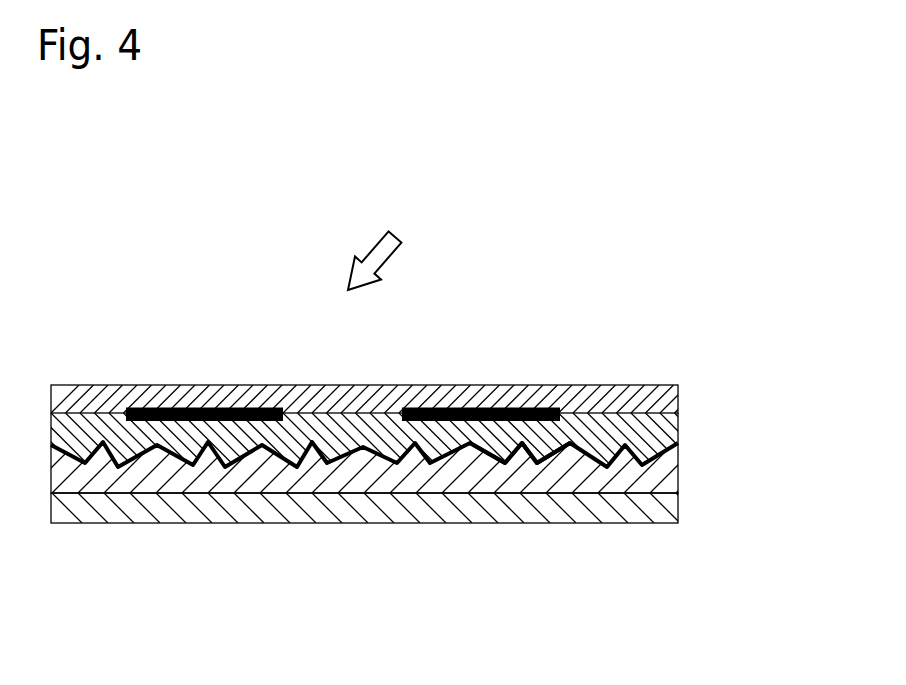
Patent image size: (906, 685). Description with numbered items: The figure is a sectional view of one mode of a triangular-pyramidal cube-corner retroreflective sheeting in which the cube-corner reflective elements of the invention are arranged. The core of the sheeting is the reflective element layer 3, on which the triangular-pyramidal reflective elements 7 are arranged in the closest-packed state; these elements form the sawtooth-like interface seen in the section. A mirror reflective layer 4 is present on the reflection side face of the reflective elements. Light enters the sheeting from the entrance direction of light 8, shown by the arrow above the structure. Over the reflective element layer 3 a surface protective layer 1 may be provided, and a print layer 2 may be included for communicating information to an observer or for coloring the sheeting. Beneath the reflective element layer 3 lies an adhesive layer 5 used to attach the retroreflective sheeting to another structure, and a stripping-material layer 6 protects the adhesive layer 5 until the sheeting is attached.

The surface protective layer 1 is at (545, 393).
The print layer 2 is at (565, 407).
The reflective element layer 3 is at (610, 428).
The mirror reflective layer 4 is at (640, 448).
The adhesive layer 5 is at (648, 475).
The stripping-material layer 6 is at (650, 512).
The triangular-pyramidal reflective elements 7 is at (543, 450).
The entrance direction of light 8 is at (382, 241).